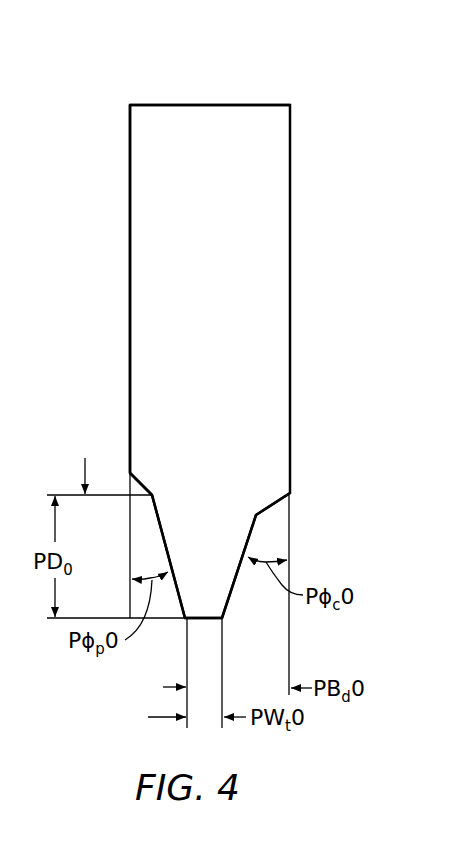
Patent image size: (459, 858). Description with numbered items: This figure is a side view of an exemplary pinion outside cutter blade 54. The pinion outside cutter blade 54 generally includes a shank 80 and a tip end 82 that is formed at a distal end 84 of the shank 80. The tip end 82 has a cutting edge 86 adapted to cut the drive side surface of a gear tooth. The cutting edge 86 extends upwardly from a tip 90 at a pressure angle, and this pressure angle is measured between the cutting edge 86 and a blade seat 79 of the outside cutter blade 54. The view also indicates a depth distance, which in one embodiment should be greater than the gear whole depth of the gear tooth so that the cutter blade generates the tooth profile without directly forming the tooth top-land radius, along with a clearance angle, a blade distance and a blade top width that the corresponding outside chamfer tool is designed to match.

The pinion outside cutter blade 54 is at (332, 103).
The shank 80 is at (156, 138).
The blade seat 79 is at (128, 240).
The distal end 84 is at (126, 472).
The cutting edge 86 is at (165, 546).
The tip end 82 is at (326, 540).
The tip 90 is at (229, 620).